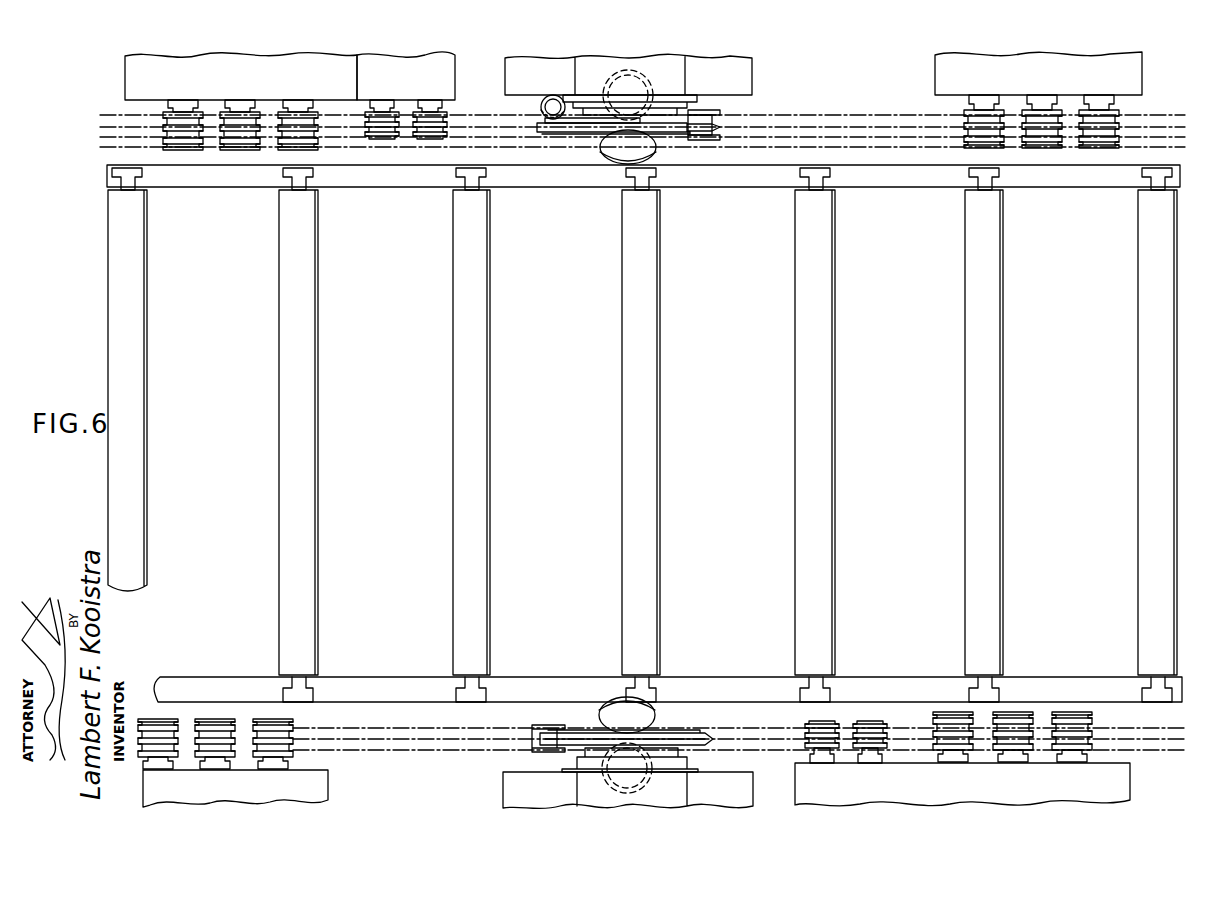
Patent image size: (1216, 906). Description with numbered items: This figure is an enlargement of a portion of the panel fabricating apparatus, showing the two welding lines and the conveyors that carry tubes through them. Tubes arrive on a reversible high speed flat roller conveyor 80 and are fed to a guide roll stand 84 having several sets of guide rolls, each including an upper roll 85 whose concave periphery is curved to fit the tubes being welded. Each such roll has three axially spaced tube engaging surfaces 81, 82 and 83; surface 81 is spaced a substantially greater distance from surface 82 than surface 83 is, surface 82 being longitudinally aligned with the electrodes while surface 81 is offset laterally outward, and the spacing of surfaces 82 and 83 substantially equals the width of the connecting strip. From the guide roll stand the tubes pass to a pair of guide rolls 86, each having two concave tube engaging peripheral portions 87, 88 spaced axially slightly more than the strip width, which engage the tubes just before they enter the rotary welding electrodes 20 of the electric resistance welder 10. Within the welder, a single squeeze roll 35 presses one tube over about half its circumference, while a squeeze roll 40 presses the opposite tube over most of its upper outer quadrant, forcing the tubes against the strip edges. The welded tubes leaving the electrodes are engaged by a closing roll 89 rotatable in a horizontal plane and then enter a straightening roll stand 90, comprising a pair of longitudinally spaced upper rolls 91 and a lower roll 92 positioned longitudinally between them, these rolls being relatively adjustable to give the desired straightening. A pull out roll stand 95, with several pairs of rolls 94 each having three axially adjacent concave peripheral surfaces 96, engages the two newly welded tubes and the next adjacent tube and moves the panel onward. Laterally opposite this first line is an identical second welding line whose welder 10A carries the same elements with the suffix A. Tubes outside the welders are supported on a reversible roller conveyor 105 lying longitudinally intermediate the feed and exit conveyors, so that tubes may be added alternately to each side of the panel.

The electric resistance welder 10 is at (638, 52).
The second welding line electric resistance welder 10A is at (678, 806).
The rotary welding electrodes 20 is at (536, 136).
The squeeze roll 35 is at (656, 82).
The squeeze roll 40 is at (622, 153).
The flat roller conveyor 80 is at (888, 444).
The tube engaging surface 81 is at (1115, 118).
The tube engaging surface 82 is at (1123, 133).
The tube engaging surface 83 is at (1118, 143).
The guide roll stand 84 is at (952, 66).
The upper guide roll 85 is at (1083, 148).
The guide roll 86 is at (712, 140).
The concave tube engaging peripheral portion 87 is at (722, 116).
The concave tube engaging peripheral portion 88 is at (727, 134).
The closing roll 89 is at (542, 102).
The straightening roll stand 90 is at (432, 42).
The upper straightening roll 91 is at (380, 141).
The lower straightening roll 92 is at (410, 141).
The pull out roll 94 is at (298, 150).
The pull out roll stand 95 is at (268, 42).
The concave peripheral surface 96 is at (321, 142).
The reversible roller conveyor 105 is at (147, 340).